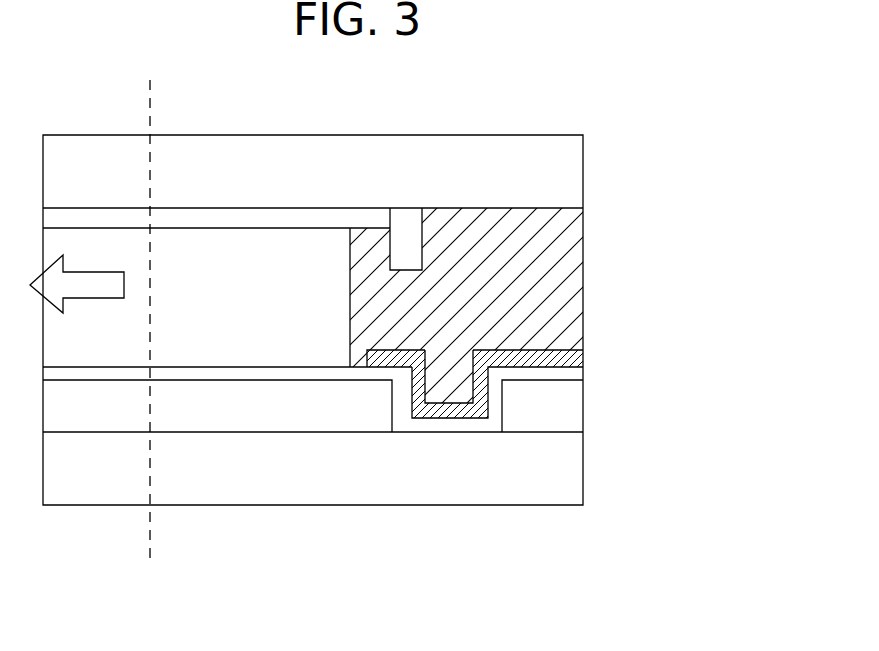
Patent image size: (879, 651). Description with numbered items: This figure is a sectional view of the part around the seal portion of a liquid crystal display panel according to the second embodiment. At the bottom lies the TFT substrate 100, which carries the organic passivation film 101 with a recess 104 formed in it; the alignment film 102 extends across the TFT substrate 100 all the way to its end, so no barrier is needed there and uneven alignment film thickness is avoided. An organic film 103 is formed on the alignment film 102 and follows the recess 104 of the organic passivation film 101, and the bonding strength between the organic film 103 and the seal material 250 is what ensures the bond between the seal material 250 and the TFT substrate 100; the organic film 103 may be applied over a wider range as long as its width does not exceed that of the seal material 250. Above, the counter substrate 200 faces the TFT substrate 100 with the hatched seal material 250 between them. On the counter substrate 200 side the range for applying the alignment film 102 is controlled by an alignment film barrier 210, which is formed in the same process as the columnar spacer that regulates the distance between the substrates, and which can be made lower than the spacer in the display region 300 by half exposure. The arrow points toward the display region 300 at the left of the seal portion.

The TFT substrate 100 is at (573, 475).
The organic passivation film 101 is at (573, 418).
The alignment film 102 is at (283, 222).
The organic film 103 is at (568, 360).
The recess 104 is at (442, 388).
The counter substrate 200 is at (575, 178).
The alignment film barrier 210 is at (408, 242).
The seal material 250 is at (563, 277).
The display region 300 is at (88, 313).